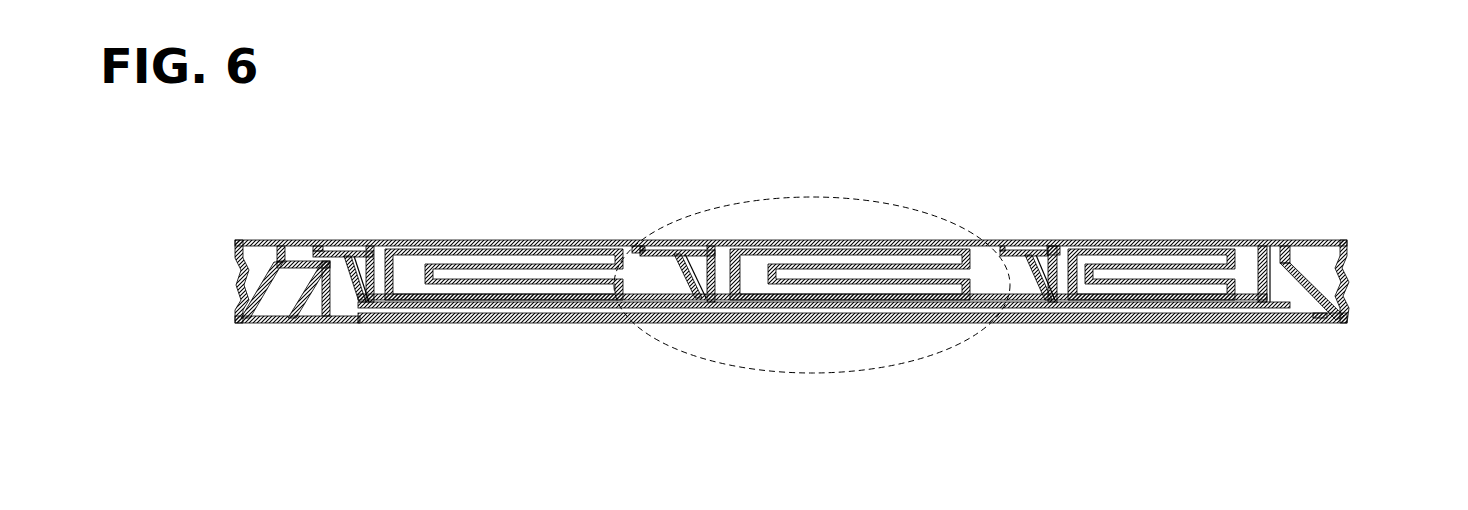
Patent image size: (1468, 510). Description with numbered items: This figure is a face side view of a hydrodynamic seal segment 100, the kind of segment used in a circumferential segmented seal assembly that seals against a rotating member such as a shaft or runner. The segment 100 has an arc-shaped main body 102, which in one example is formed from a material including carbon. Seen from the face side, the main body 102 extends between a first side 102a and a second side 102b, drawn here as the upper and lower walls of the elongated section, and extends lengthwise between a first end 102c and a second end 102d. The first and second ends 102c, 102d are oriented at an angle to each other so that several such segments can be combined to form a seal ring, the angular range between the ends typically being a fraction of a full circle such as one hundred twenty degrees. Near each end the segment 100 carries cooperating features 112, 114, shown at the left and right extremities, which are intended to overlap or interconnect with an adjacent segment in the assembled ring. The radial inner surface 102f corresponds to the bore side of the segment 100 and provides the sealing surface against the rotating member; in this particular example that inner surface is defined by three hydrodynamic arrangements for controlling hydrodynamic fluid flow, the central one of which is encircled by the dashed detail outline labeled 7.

The segment 100 is at (600, 179).
The main body 102 is at (279, 246).
The first side 102a is at (490, 240).
The second side 102b is at (475, 323).
The first end 102c is at (248, 312).
The second end 102d is at (1347, 303).
The radial inner surface 102f is at (1017, 287).
The cooperating feature 112 is at (300, 314).
The cooperating feature 114 is at (1300, 303).
The detail region of FIG. 7 is at (877, 366).